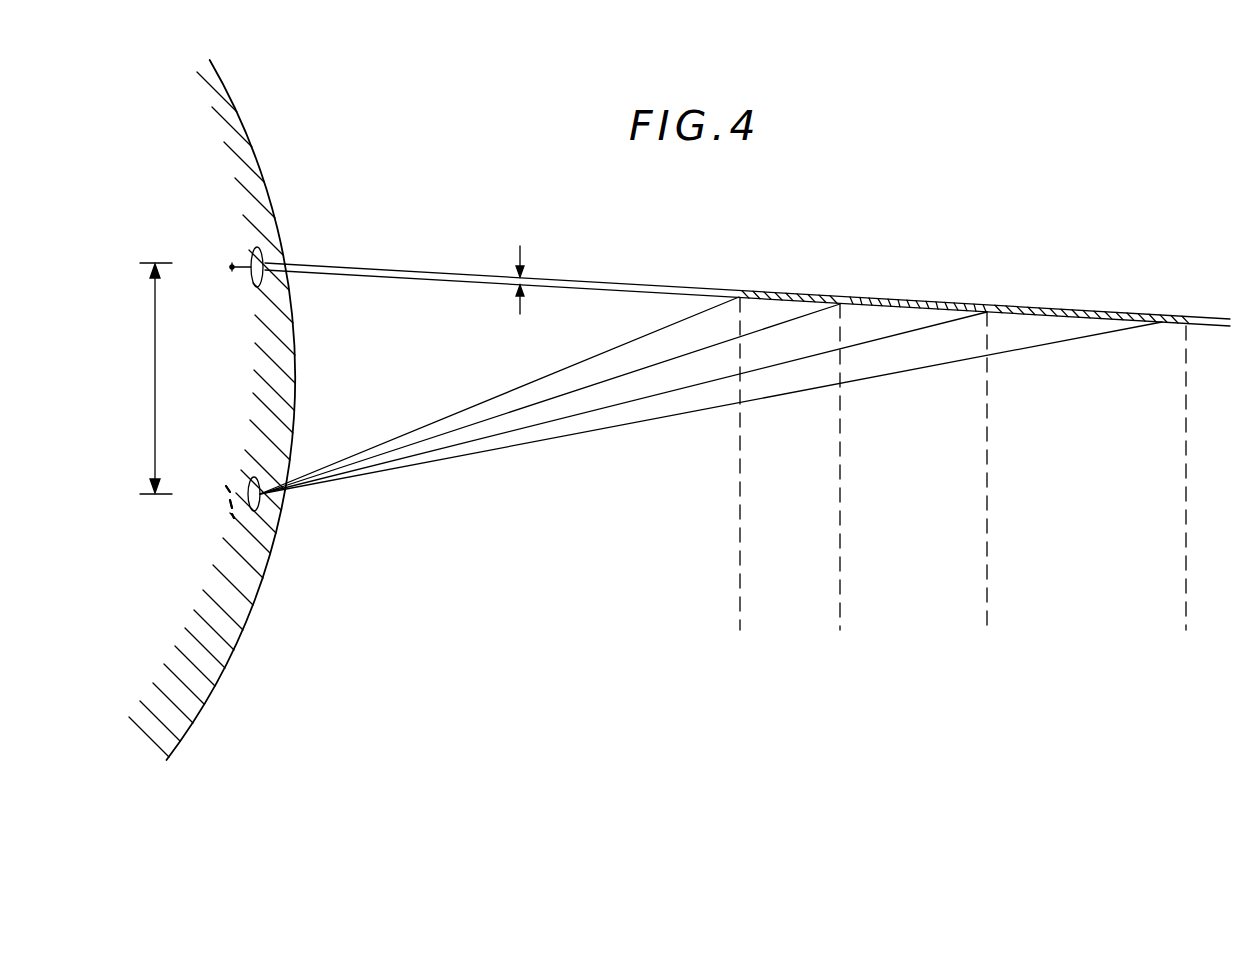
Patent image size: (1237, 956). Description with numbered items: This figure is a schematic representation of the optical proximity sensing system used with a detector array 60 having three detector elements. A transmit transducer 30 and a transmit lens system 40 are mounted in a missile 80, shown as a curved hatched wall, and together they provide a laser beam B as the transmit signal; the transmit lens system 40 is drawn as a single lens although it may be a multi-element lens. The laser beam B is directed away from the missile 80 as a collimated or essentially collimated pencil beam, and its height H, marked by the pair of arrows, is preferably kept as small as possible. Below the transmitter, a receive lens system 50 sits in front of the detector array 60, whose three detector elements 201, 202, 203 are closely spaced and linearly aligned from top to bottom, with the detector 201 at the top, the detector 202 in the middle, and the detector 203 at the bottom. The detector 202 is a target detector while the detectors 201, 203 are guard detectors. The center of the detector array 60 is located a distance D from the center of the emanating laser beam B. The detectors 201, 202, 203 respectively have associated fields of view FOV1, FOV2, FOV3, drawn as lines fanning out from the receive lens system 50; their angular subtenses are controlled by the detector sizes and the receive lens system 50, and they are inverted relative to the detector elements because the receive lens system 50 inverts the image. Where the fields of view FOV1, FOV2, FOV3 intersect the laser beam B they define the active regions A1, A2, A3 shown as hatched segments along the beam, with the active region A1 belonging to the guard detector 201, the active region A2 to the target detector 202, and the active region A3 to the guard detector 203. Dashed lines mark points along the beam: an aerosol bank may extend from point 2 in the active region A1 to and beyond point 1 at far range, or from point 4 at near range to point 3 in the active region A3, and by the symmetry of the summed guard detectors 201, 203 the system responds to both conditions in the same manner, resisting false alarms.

The missile 80 is at (247, 131).
The transmit lens system 40 is at (254, 251).
The transmit transducer 30 is at (230, 269).
The receive lens system 50 is at (264, 502).
The detector array 60 is at (227, 486).
The guard detector 201 is at (226, 490).
The target detector 202 is at (230, 502).
The guard detector 203 is at (232, 518).
The laser beam B is at (622, 282).
The height of the laser beam H is at (517, 269).
The distance D is at (142, 378).
The active region A1 is at (1080, 311).
The active region A2 is at (931, 302).
The active region A3 is at (802, 292).
The field of view FOV1 is at (612, 420).
The field of view FOV2 is at (484, 426).
The field of view FOV3 is at (515, 388).
The point 1 is at (1187, 493).
The point 2 is at (983, 486).
The point 3 is at (837, 483).
The point 4 is at (734, 480).